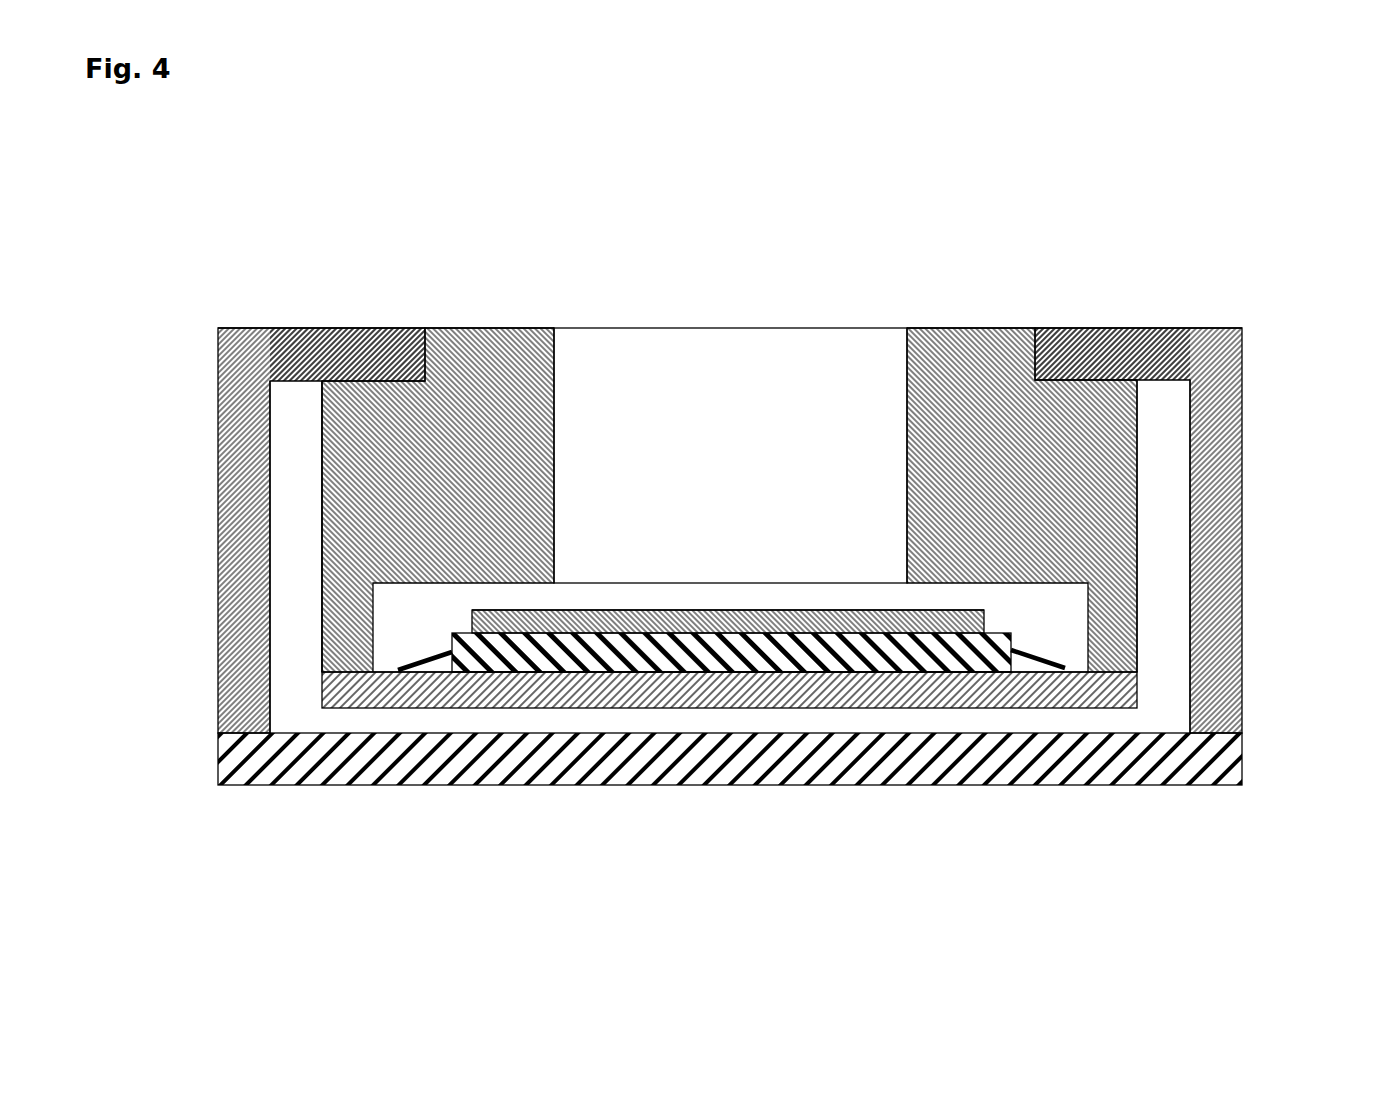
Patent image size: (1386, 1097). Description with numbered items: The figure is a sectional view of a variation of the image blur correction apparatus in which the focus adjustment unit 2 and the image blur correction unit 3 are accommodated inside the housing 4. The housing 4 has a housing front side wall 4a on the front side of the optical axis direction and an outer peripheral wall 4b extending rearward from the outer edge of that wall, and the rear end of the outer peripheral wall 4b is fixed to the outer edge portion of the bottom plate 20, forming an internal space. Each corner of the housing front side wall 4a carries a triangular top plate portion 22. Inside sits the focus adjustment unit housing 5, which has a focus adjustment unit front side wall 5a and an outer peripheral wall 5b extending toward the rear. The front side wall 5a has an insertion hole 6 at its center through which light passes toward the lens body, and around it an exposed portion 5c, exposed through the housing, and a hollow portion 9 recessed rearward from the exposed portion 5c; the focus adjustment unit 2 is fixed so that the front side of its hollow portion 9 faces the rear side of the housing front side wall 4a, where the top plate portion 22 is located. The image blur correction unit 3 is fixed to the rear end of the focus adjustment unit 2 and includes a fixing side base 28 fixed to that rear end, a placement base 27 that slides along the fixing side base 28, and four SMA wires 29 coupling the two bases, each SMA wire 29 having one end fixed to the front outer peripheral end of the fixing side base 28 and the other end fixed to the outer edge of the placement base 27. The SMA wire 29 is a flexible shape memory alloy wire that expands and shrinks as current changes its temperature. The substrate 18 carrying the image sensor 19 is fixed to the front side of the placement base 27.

The focus adjustment unit 2 is at (744, 575).
The image blur correction unit 3 is at (736, 794).
The housing 4 is at (771, 456).
The housing front side wall 4a is at (230, 327).
The outer peripheral wall 4b is at (1213, 440).
The focus adjustment unit housing 5 is at (740, 442).
The focus adjustment unit front side wall 5a is at (540, 327).
The outer peripheral wall 5b is at (322, 498).
The exposed portion 5c is at (490, 328).
The insertion hole 6 is at (695, 380).
The hollow portion 9 is at (360, 379).
The substrate 18 is at (703, 615).
The image sensor 19 is at (722, 852).
The bottom plate 20 is at (1225, 760).
The top plate portion 22 is at (303, 327).
The placement base 27 is at (593, 655).
The fixing side base 28 is at (928, 672).
The SMA wire 29 is at (736, 768).